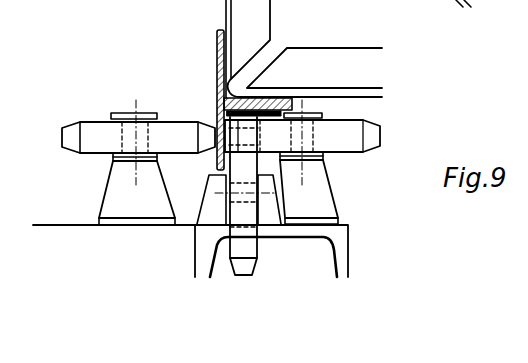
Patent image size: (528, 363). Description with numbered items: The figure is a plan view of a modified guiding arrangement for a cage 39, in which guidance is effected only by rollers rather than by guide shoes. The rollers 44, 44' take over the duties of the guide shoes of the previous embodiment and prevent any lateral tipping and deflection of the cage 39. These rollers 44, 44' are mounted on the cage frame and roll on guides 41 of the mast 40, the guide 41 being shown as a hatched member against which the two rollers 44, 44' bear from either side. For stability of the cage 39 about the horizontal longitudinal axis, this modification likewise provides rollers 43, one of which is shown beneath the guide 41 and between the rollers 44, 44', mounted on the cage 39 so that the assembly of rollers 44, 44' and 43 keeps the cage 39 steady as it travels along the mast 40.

The cage 39 is at (342, 237).
The mast 40 is at (378, 92).
The guide 41 is at (217, 112).
The roller 43 is at (247, 267).
The roller 44 is at (138, 158).
The roller 44' is at (318, 162).